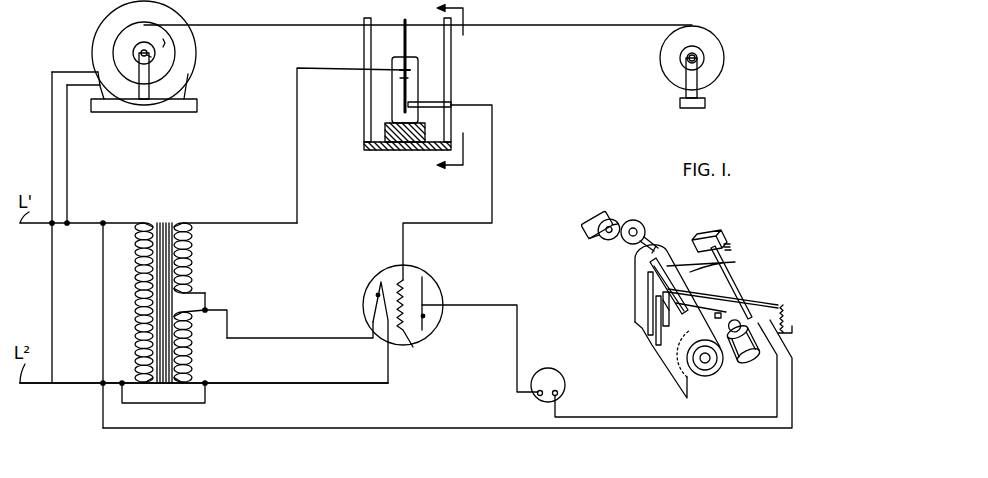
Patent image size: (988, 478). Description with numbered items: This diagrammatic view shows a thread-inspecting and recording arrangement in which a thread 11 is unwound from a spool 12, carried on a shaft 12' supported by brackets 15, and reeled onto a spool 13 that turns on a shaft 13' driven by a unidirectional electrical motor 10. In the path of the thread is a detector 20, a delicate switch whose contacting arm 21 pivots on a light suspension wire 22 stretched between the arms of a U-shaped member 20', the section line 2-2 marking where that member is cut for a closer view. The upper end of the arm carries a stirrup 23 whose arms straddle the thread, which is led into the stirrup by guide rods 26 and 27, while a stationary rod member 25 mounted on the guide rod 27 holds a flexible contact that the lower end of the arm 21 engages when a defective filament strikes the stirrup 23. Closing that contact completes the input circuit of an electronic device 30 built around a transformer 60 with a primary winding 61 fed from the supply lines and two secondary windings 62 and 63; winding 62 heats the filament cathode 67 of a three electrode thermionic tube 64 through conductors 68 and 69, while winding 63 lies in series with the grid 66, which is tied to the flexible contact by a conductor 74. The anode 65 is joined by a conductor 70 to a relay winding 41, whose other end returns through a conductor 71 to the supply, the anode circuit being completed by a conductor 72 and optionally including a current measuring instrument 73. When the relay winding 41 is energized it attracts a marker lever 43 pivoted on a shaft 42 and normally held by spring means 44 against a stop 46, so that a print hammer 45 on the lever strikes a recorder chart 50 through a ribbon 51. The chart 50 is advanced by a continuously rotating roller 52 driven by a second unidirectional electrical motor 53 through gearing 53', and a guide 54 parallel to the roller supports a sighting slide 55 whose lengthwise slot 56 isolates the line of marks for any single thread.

The section line 2- 2 is at (458, 88).
The unidirectional electrical motor 10 is at (105, 38).
The thread 11 is at (281, 25).
The spool 12 is at (703, 56).
The shaft 12' is at (721, 60).
The spool 13 is at (193, 47).
The shaft 13' is at (187, 72).
The brackets 15 is at (695, 78).
The detector 20 is at (375, 150).
The U-shaped member 20' is at (369, 90).
The contacting arm 21 is at (400, 78).
The suspension wire 22 is at (410, 70).
The stirrup 23 is at (404, 20).
The stationary rod member 25 is at (430, 105).
The guide rod 26 is at (370, 38).
The guide rod 27 is at (450, 38).
The electronic device 30 is at (371, 247).
The relay winding 41 is at (742, 362).
The shaft 42 is at (738, 262).
The marker lever 43 is at (723, 254).
The spring means 44 is at (784, 306).
The print hammer 45 is at (713, 292).
The stop 46 is at (731, 304).
The recorder chart 50 is at (673, 386).
The ribbon 51 is at (658, 262).
The roller 52 is at (698, 373).
The unidirectional electrical motor 53 is at (602, 216).
The gearing 53' is at (641, 222).
The guide 54 is at (646, 275).
The sighting slide 55 is at (648, 306).
The slot 56 is at (656, 324).
The transformer 60 is at (172, 305).
The primary winding 61 is at (139, 279).
The secondary winding 62 is at (191, 359).
The secondary winding 63 is at (193, 271).
The three electrode thermionic tube 64 is at (437, 290).
The anode 65 is at (425, 316).
The grid 66 is at (410, 326).
The cathode 67 is at (377, 295).
The conductor 68 is at (284, 338).
The conductor 69 is at (312, 383).
The conductor 70 is at (519, 303).
The conductor 71 is at (428, 428).
The conductor 72 is at (196, 406).
The current measuring instrument 73 is at (545, 369).
The conductor 74 is at (492, 151).